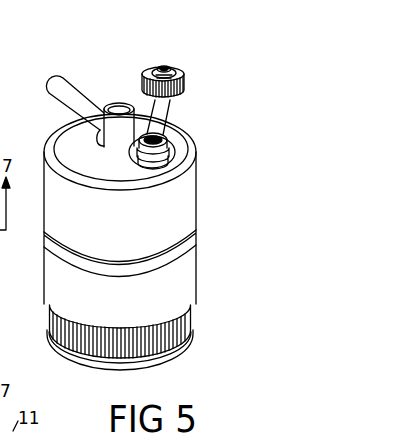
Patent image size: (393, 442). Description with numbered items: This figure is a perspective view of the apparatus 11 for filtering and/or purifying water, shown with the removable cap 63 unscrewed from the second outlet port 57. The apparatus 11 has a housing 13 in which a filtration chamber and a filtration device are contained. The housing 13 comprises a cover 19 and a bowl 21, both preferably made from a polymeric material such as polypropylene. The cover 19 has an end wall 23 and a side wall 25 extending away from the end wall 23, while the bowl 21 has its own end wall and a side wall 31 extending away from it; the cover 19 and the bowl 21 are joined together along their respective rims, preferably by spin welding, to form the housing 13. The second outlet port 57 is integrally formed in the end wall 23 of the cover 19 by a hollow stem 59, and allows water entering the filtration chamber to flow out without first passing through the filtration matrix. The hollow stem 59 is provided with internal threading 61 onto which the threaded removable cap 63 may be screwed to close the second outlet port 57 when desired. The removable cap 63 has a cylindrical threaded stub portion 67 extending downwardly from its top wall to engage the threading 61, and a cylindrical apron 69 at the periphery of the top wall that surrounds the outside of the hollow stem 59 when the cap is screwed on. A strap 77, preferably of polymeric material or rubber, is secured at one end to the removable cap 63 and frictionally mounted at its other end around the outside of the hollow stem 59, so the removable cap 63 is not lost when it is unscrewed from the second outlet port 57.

The apparatus 11 is at (208, 125).
The housing 13 is at (180, 218).
The cover 19 is at (190, 187).
The bowl 21 is at (178, 290).
The end wall 23 is at (72, 121).
The side wall 25 is at (175, 202).
The side wall 31 is at (78, 295).
The second outlet port 57 is at (170, 144).
The hollow stem 59 is at (137, 154).
The internal threading 61 is at (147, 133).
The removable cap 63 is at (181, 91).
The cylindrical threaded stub portion 67 is at (178, 63).
The cylindrical apron 69 is at (155, 69).
The strap 77 is at (160, 121).